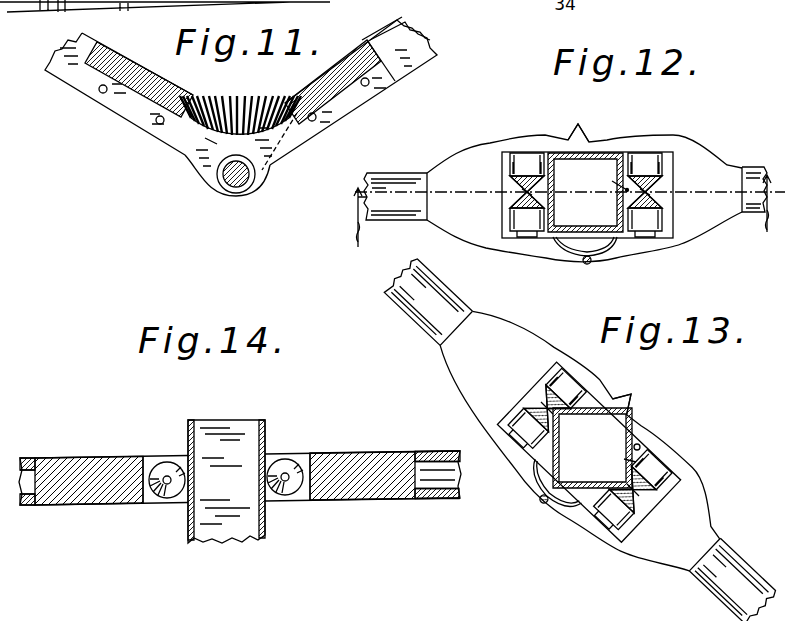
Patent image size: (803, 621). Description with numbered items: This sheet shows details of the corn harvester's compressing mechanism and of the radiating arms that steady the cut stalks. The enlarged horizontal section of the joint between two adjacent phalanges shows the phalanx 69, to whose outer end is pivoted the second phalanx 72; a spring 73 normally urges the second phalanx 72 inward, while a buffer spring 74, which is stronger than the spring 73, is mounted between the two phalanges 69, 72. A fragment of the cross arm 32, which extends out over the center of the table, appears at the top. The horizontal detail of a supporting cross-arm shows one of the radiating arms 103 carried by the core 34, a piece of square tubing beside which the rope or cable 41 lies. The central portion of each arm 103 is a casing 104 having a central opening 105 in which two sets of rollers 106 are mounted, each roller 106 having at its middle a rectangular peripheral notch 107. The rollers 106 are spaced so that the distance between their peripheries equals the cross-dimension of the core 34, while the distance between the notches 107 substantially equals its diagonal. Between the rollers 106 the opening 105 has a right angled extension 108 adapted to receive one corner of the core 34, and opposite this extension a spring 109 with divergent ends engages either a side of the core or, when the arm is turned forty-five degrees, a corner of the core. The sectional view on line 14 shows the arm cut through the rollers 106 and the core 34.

In FIG. 12, the section line 14— 14 is at (558, 211).
In FIG. 11, the cross arm 32 is at (50, 9).
In FIG. 12, the core or rod 34 is at (612, 152).
In FIG. 13, the core or rod 34 is at (640, 442).
In FIG. 14, the core or rod 34 is at (242, 460).
In FIG. 12, the rope or cable 41 is at (608, 180).
In FIG. 13, the rope or cable 41 is at (620, 456).
In FIG. 11, the phalanx 69 is at (398, 58).
In FIG. 11, the second phalanx 72 is at (122, 97).
In FIG. 11, the spring 73 is at (250, 193).
In FIG. 11, the buffer spring 74 is at (238, 104).
In FIG. 12, the radiating arms 103 is at (388, 190).
In FIG. 13, the radiating arms 103 is at (457, 307).
In FIG. 14, the radiating arms 103 is at (25, 463).
In FIG. 12, the casing 104 is at (515, 150).
In FIG. 13, the casing 104 is at (700, 528).
In FIG. 14, the casing 104 is at (337, 468).
In FIG. 12, the central opening 105 is at (667, 173).
In FIG. 13, the central opening 105 is at (643, 507).
In FIG. 14, the central opening 105 is at (150, 457).
In FIG. 12, the rollers 106 is at (533, 217).
In FIG. 13, the rollers 106 is at (583, 388).
In FIG. 14, the rollers 106 is at (170, 499).
In FIG. 12, the rectangular peripheral notch 107 is at (520, 196).
In FIG. 13, the rectangular peripheral notch 107 is at (513, 411).
In FIG. 12, the right angled extension 108 is at (585, 144).
In FIG. 13, the right angled extension 108 is at (633, 418).
In FIG. 12, the spring 109 is at (607, 237).
In FIG. 13, the spring 109 is at (573, 496).